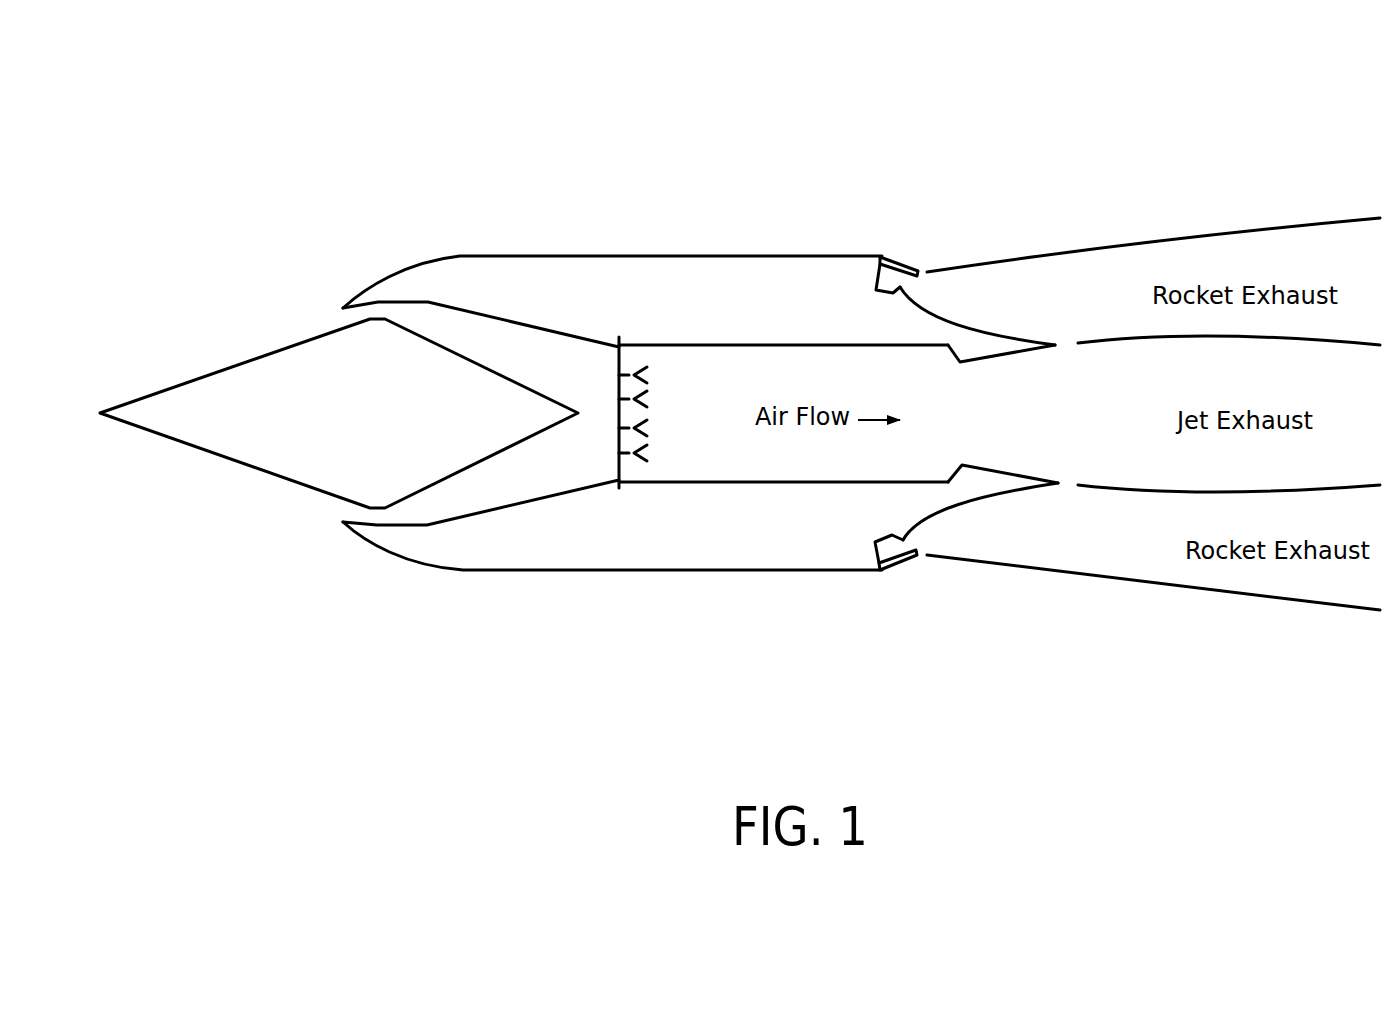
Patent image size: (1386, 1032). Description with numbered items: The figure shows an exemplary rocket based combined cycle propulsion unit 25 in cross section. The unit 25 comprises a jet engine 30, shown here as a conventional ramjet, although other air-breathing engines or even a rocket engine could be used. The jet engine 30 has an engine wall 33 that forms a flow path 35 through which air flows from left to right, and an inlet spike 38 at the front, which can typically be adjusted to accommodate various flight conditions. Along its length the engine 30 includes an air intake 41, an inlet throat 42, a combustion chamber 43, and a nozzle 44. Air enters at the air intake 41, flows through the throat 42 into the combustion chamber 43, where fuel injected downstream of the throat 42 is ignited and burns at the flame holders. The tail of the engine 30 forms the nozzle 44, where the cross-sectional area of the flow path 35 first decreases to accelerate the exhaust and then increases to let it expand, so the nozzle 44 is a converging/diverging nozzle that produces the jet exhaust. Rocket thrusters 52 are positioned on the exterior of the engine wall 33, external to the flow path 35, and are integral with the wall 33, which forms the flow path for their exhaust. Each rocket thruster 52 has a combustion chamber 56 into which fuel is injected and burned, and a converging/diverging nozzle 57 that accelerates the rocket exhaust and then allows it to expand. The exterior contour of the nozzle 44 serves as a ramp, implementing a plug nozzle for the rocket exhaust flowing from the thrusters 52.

The RBCC propulsion unit 25 is at (922, 220).
The jet engine 30 is at (350, 552).
The engine wall 33 is at (560, 256).
The flow path 35 is at (707, 472).
The inlet spike 38 is at (243, 434).
The air intake 41 is at (334, 318).
The inlet throat 42 is at (472, 548).
The combustion chamber 43 is at (737, 318).
The nozzle 44 is at (981, 340).
The rocket thruster 52 is at (868, 271).
The combustion chamber 56 is at (882, 281).
The converging/diverging nozzle 57 is at (900, 300).